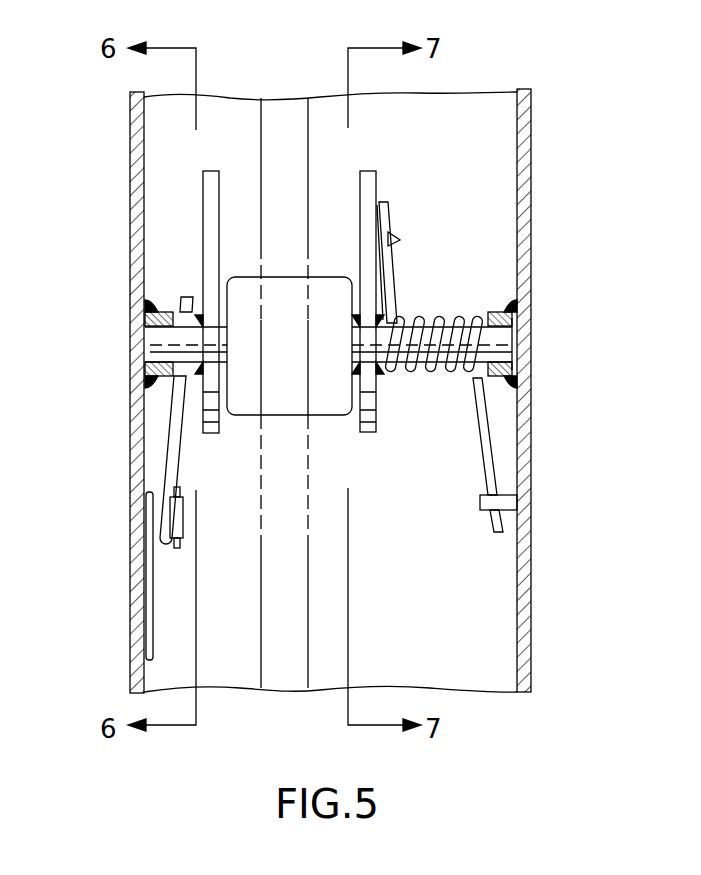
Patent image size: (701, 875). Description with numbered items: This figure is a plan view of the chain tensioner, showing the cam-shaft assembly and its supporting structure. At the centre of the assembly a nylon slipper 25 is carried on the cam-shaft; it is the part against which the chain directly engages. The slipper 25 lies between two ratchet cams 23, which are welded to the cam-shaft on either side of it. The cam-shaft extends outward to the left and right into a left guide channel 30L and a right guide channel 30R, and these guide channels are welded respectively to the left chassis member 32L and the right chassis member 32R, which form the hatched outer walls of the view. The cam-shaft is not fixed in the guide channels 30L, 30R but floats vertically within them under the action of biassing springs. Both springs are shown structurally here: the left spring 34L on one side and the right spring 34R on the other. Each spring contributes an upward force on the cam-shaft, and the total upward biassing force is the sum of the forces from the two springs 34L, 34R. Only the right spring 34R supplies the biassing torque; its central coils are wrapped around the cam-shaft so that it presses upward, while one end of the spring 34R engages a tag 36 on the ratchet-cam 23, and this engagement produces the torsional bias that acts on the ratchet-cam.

The ratchet-cam 23 is at (210, 180).
The slipper 25 is at (320, 415).
The left guide channel 30L is at (146, 316).
The right guide channel 30R is at (515, 314).
The left chassis member 32L is at (136, 212).
The right chassis member 32R is at (531, 142).
The left spring 34L is at (175, 452).
The right spring 34R is at (482, 460).
The tag 36 is at (395, 240).